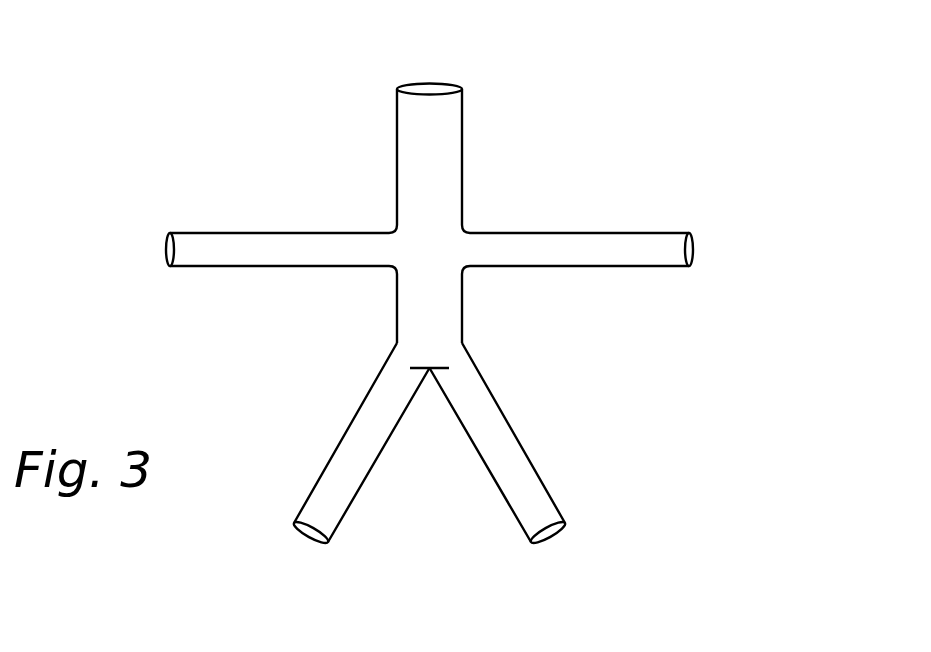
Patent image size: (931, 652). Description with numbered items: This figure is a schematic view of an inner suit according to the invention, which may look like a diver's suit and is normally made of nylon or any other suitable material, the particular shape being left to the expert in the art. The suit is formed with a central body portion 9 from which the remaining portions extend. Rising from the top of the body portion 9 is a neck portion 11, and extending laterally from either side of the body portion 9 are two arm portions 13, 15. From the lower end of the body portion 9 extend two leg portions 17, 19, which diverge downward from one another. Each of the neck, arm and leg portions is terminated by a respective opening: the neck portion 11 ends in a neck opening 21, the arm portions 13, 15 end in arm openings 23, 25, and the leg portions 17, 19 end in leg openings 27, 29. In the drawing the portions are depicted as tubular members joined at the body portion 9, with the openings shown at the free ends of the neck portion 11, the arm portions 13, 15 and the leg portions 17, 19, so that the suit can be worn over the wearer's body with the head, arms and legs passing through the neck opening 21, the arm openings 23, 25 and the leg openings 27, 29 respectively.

The body portion 9 is at (410, 303).
The neck portion 11 is at (418, 170).
The arm portion 13 is at (270, 243).
The arm portion 15 is at (546, 247).
The leg portion 17 is at (360, 445).
The leg portion 19 is at (503, 452).
The neck opening 21 is at (433, 88).
The arm opening 23 is at (167, 253).
The arm opening 25 is at (690, 263).
The leg opening 27 is at (310, 533).
The leg opening 29 is at (547, 533).